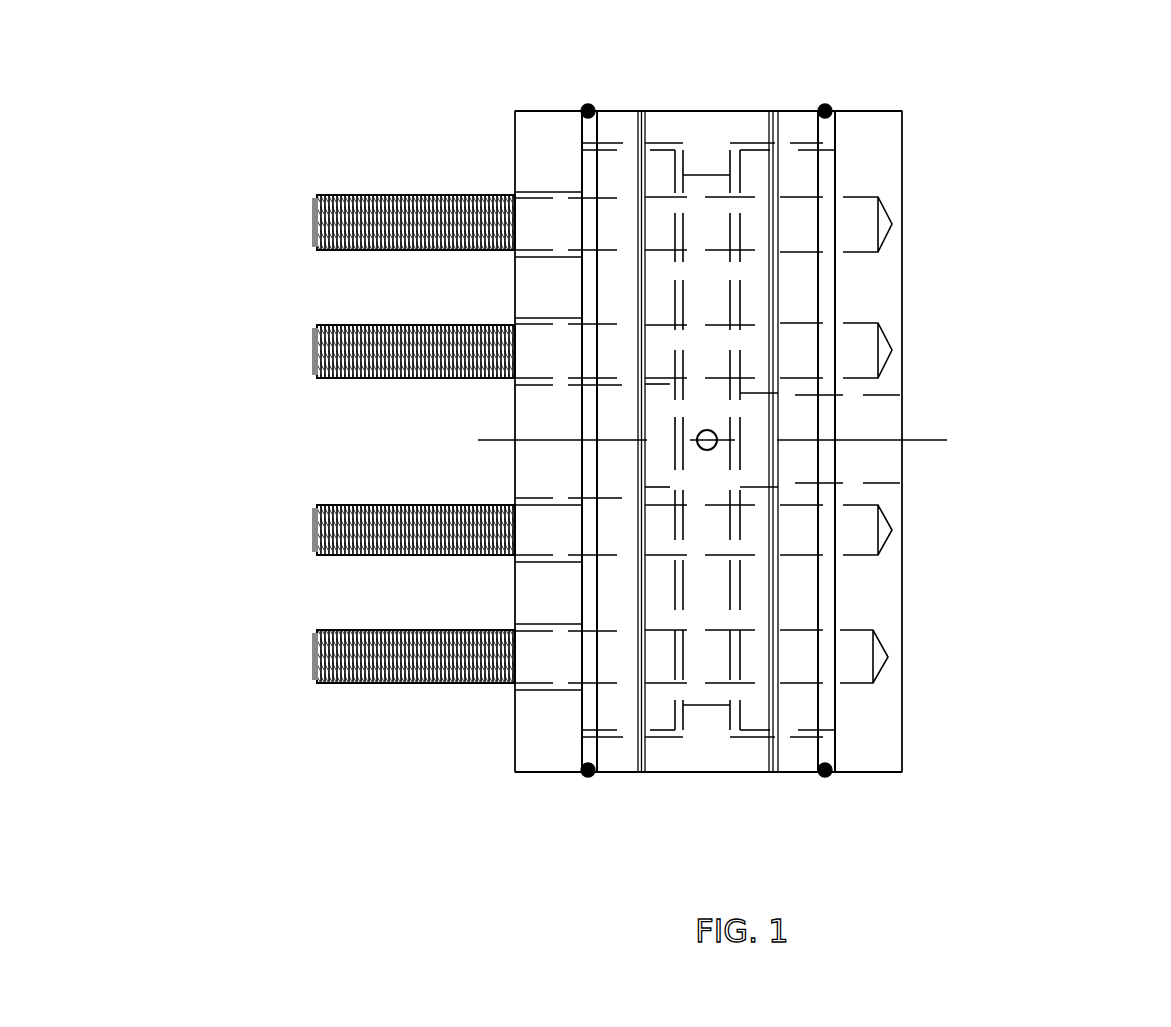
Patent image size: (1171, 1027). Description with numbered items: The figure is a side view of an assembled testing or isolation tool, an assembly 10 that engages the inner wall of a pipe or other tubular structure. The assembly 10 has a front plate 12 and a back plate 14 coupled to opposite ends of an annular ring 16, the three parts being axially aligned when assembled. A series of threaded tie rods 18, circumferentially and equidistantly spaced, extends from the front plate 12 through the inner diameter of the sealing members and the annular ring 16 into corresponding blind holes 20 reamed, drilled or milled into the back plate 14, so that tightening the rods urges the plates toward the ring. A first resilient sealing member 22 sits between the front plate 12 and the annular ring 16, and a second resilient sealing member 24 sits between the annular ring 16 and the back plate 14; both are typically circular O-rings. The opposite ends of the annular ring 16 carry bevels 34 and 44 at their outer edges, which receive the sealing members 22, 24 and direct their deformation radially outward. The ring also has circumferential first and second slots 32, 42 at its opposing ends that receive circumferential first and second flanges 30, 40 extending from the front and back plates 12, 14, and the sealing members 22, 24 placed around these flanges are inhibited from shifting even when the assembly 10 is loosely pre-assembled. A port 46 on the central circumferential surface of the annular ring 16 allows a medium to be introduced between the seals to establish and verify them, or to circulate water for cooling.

The assembly 10 is at (996, 225).
The front plate 12 is at (544, 107).
The back plate 14 is at (883, 107).
The annular ring 16 is at (705, 771).
The threaded tie rods 18 is at (318, 218).
The blind holes 20 is at (868, 226).
The first resilient sealing member 22 is at (587, 108).
The second resilient sealing member 24 is at (826, 108).
The first flange 30 is at (651, 172).
The first slot 32 is at (679, 172).
The bevel 34 is at (587, 143).
The second flange 40 is at (759, 172).
The second slot 42 is at (737, 172).
The bevel 44 is at (823, 141).
The port 46 is at (715, 446).